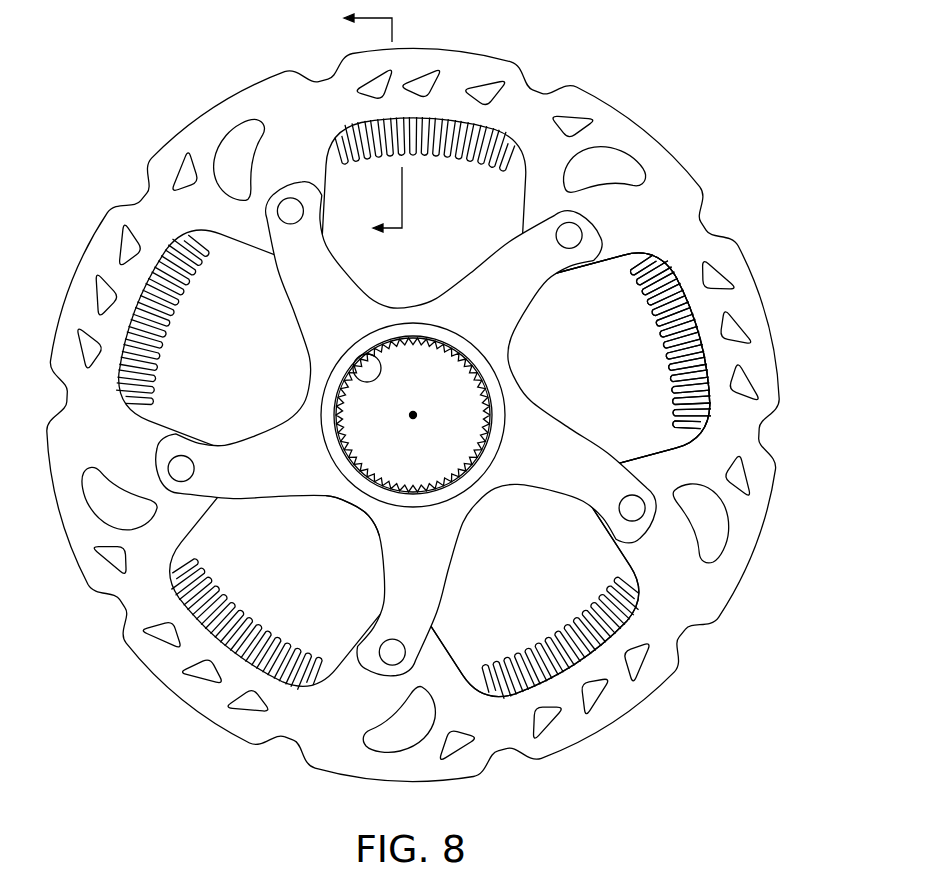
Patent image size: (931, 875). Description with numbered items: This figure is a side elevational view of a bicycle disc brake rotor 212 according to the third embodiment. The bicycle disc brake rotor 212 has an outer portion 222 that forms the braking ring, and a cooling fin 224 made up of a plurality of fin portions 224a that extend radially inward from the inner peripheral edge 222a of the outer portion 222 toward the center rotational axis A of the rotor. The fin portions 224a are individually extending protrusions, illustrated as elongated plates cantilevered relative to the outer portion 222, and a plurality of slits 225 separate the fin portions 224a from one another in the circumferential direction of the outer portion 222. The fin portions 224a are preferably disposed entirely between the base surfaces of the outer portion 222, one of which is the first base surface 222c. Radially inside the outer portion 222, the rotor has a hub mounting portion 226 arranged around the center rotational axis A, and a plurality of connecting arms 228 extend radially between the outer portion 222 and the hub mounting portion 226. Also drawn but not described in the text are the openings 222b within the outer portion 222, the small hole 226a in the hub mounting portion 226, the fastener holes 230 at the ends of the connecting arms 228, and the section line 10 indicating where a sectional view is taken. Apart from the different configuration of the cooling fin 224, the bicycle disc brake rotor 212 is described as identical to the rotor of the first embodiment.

The bicycle disc brake rotor 212 is at (658, 67).
The outer portion 222 is at (689, 159).
The inner peripheral edge 222a is at (758, 431).
The openings 222b is at (532, 222).
The first base surface 222c is at (710, 590).
The cooling fin 224 is at (653, 390).
The fin portions 224a is at (703, 348).
The slits 225 is at (657, 343).
The hub mounting portion 226 is at (519, 377).
The carrier hole 226a is at (354, 366).
The connecting arms 228 is at (376, 552).
The fastener holes 230 is at (290, 206).
The section line 10 is at (357, 124).
The center rotational axis A is at (416, 410).